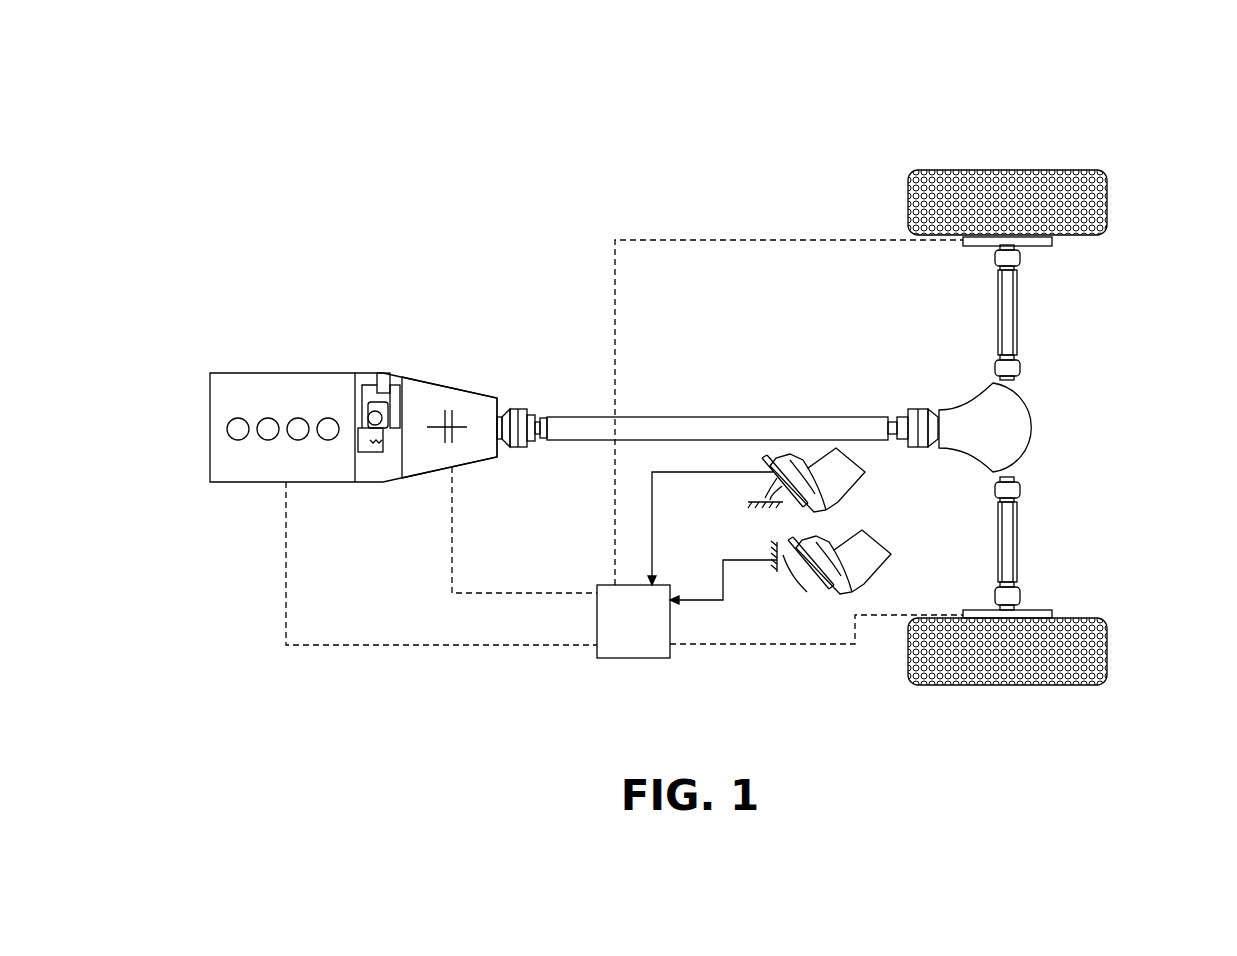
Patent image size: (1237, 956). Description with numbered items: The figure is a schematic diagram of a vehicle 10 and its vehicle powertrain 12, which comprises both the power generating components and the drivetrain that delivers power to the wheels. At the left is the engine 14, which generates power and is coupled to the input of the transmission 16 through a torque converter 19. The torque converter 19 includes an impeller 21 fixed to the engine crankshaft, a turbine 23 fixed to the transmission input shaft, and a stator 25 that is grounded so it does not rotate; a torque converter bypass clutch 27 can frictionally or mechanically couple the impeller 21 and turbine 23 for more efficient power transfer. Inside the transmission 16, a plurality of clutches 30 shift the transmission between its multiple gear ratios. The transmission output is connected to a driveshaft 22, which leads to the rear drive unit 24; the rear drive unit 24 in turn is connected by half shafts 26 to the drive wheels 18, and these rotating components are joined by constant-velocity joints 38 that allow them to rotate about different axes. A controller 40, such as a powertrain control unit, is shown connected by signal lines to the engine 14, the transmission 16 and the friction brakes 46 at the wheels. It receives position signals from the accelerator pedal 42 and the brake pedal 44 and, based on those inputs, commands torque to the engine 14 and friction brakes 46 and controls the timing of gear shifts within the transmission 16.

The vehicle 10 is at (410, 117).
The vehicle powertrain 12 is at (453, 228).
The engine 14 is at (245, 482).
The transmission 16 is at (470, 458).
The drive wheels 18 is at (1107, 203).
The torque converter 19 is at (372, 482).
The impeller 21 is at (388, 398).
The driveshaft 22 is at (723, 417).
The turbine 23 is at (370, 410).
The rear drive unit 24 is at (1035, 420).
The stator 25 is at (368, 445).
The half shafts 26 is at (1017, 318).
The torque converter bypass clutch 27 is at (387, 378).
The clutches 30 is at (455, 420).
The constant-velocity joints 38 is at (525, 408).
The controller 40 is at (632, 658).
The accelerator pedal 42 is at (773, 478).
The brake pedal 44 is at (806, 583).
The friction brakes 46 is at (978, 246).